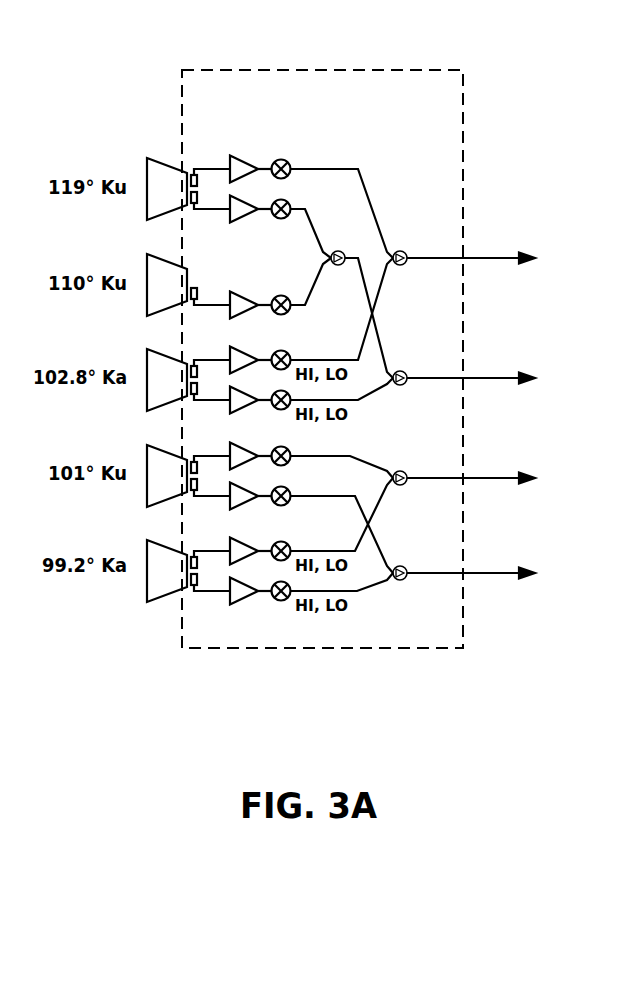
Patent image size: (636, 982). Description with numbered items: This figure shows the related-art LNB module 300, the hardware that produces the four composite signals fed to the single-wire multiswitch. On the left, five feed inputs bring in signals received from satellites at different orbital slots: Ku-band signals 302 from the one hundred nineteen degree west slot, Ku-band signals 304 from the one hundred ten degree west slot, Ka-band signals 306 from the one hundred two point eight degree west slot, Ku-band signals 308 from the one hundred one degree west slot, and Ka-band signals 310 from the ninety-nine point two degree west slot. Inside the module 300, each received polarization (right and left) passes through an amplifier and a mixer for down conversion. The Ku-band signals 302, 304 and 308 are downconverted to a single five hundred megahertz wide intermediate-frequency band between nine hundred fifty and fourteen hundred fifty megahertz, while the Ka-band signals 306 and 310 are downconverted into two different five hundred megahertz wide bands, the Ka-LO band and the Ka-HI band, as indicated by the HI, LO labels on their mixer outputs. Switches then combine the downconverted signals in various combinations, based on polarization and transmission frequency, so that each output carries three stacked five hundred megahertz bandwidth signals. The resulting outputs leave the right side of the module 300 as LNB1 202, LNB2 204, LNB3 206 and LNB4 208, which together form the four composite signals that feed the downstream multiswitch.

The LNB module 300 is at (300, 70).
The Ku-band signals 302 is at (147, 172).
The Ku-band signals 304 is at (146, 270).
The Ka-band signals 306 is at (146, 365).
The Ku-band signals 308 is at (146, 458).
The Ka-band signals 310 is at (146, 553).
The LNB1 signal 202 is at (483, 571).
The LNB2 signal 204 is at (480, 476).
The LNB3 signal 206 is at (483, 376).
The LNB4 signal 208 is at (487, 255).